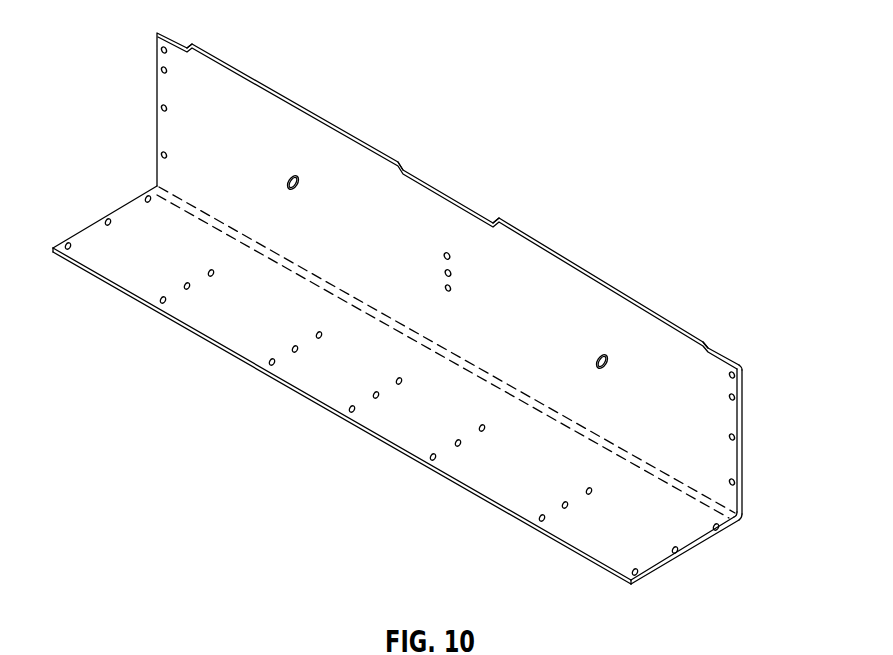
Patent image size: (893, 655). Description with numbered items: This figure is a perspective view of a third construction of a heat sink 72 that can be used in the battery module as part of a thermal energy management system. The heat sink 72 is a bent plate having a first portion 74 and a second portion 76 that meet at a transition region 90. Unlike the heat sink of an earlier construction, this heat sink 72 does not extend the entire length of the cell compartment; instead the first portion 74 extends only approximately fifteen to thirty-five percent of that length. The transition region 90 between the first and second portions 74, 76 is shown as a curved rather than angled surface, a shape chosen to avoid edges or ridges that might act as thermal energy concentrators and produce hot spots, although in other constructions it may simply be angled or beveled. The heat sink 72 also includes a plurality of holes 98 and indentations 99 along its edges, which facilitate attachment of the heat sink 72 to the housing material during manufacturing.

The heat sink 72 is at (281, 91).
The first portion 74 is at (656, 560).
The second portion 76 is at (741, 420).
The transition region 90 is at (742, 518).
The holes 98 is at (161, 154).
The indentations 99 is at (166, 27).